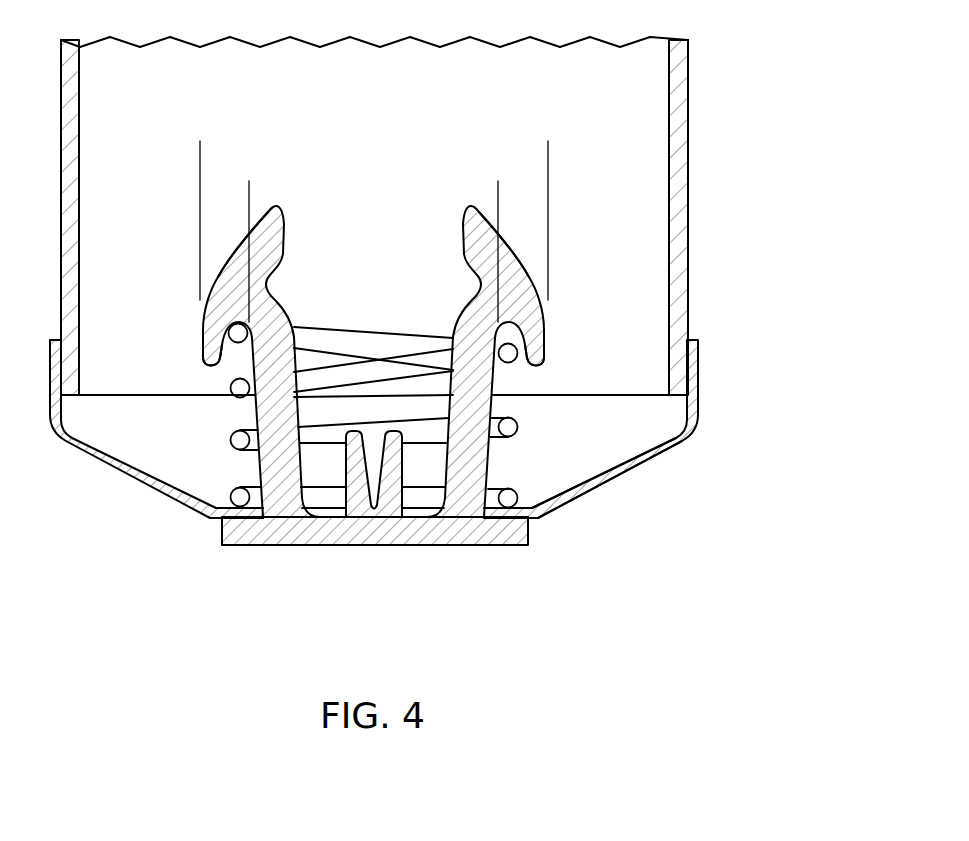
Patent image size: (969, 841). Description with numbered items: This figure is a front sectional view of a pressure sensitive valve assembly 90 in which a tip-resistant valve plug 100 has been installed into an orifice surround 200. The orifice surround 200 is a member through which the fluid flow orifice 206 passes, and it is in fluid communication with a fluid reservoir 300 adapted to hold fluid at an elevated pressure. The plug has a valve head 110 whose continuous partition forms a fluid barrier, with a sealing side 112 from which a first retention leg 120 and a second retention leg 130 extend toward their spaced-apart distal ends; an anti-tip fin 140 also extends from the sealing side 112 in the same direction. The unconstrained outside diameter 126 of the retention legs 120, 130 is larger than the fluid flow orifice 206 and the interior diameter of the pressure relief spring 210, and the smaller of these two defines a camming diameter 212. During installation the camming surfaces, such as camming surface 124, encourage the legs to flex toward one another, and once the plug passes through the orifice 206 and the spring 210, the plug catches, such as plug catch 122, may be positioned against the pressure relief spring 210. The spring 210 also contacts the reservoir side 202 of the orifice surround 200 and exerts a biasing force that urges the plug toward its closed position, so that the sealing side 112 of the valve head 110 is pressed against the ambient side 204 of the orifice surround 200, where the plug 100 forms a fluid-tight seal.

The pressure sensitive valve assembly 90 is at (414, 342).
The tip-resistant valve plug 100 is at (370, 430).
The valve head 110 is at (375, 583).
The sealing side 112 is at (491, 511).
The first retention leg 120 is at (370, 347).
The plug catch 122 is at (240, 320).
The camming surface 124 is at (213, 277).
The unconstrained outside diameter 126 is at (548, 141).
The second retention leg 130 is at (449, 417).
The anti-tip fin 140 is at (444, 474).
The orifice surround 200 is at (426, 426).
The reservoir side 202 is at (630, 466).
The ambient side 204 is at (618, 490).
The fluid flow orifice 206 is at (247, 496).
The pressure relief spring 210 is at (231, 388).
The camming diameter 212 is at (498, 181).
The fluid reservoir 300 is at (426, 216).